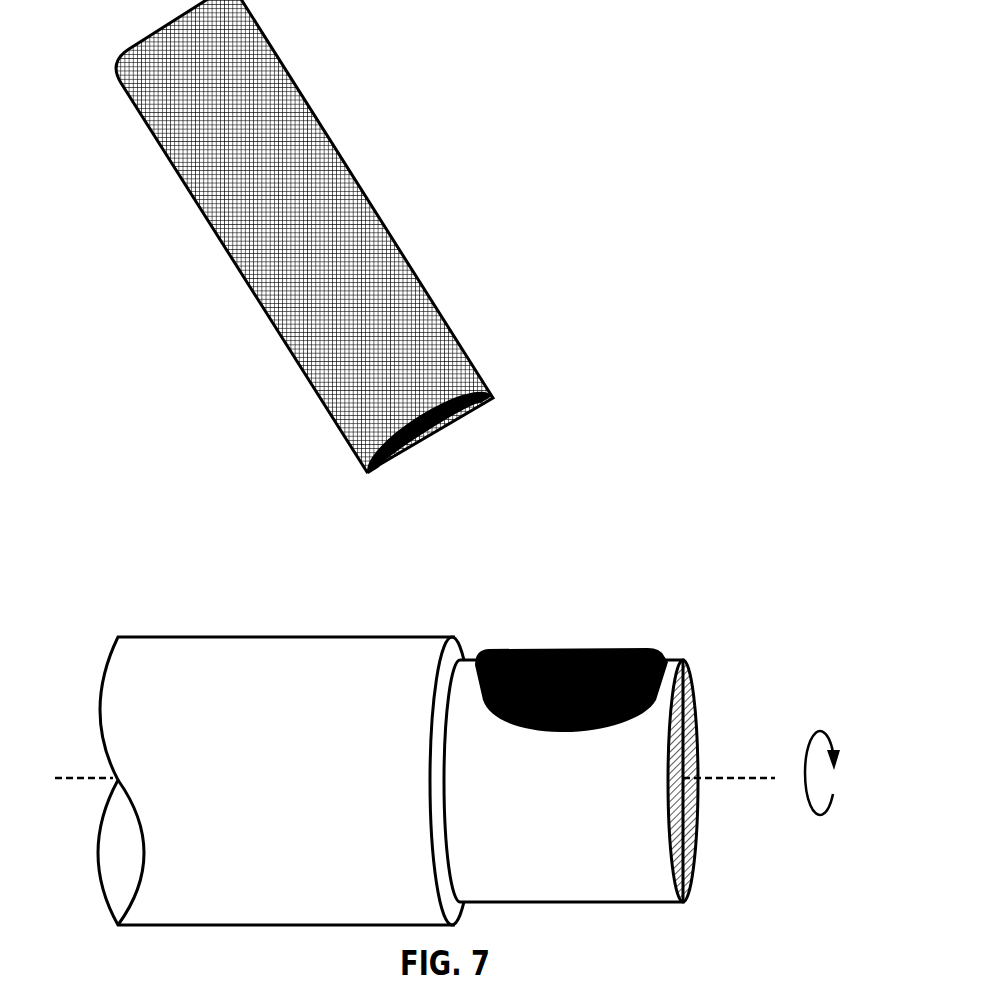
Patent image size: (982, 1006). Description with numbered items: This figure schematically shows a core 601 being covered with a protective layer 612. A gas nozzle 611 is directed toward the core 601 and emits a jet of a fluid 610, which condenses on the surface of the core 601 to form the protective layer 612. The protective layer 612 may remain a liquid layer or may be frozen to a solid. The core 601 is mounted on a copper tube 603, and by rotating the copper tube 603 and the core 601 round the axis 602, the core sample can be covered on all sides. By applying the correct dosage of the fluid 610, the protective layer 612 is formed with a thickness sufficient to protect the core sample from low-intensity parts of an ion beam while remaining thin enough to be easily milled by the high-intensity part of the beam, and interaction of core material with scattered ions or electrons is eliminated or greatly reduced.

The core 601 is at (615, 848).
The axis 602 is at (73, 773).
The copper tube 603 is at (313, 720).
The fluid 610 is at (505, 530).
The gas nozzle 611 is at (385, 327).
The protective layer 612 is at (630, 648).